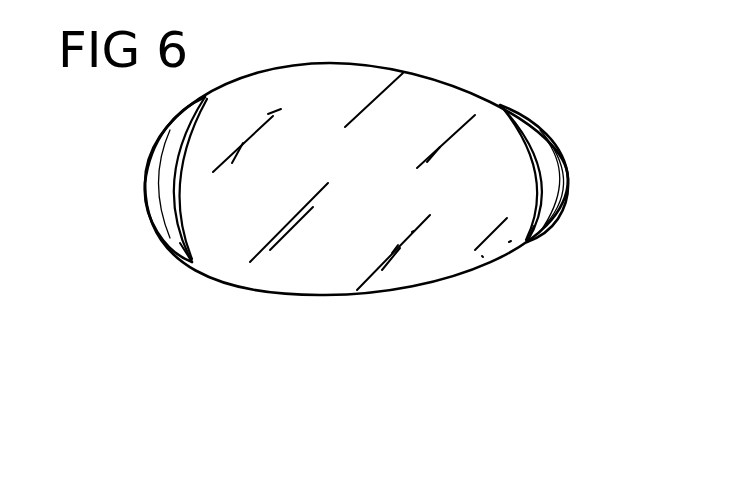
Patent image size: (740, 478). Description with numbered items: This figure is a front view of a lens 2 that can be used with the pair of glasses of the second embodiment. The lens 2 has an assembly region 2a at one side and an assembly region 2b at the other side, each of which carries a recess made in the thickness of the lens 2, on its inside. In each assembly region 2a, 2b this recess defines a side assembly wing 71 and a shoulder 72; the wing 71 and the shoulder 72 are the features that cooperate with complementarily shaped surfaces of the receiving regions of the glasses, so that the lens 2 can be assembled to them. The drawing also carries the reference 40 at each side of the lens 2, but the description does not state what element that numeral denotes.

The lens 2 is at (440, 250).
The assembly region 2a is at (148, 159).
The assembly region 2b is at (568, 182).
The cap rim 40 is at (172, 128).
The side assembly wing 71 is at (158, 187).
The shoulder 72 is at (180, 243).